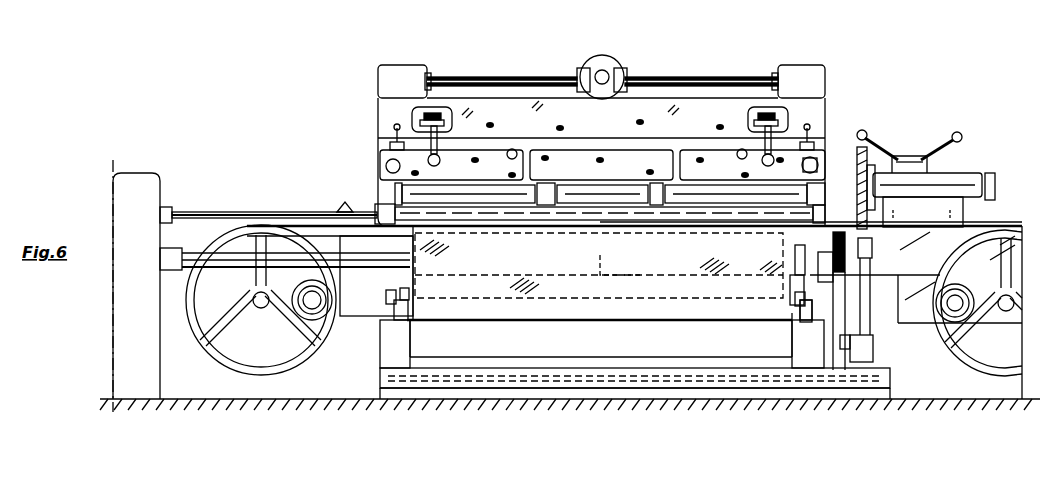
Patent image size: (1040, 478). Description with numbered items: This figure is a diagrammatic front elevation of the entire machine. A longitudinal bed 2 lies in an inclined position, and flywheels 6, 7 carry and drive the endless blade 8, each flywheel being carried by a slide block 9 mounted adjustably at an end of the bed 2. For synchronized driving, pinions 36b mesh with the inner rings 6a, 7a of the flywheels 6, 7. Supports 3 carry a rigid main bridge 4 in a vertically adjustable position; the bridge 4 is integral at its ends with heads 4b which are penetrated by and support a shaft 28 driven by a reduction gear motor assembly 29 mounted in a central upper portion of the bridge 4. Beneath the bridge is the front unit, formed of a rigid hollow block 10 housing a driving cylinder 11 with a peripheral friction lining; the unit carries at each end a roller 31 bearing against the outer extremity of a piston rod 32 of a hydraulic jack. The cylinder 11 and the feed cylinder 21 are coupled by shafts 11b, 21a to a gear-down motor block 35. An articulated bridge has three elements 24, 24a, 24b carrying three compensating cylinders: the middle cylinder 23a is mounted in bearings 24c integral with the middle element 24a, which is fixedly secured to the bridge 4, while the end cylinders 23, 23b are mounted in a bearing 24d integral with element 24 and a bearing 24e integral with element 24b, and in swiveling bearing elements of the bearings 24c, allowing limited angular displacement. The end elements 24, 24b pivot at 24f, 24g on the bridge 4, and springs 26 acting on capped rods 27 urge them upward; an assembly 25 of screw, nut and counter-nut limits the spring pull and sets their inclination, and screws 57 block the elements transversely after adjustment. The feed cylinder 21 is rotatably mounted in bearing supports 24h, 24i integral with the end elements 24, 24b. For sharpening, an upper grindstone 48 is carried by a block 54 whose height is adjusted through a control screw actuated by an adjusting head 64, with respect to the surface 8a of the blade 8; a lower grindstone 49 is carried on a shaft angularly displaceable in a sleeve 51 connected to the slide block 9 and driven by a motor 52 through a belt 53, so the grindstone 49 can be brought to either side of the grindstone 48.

The longitudinal bed 2 is at (258, 245).
The supports 3 is at (605, 52).
The rigid main bridge 4 is at (455, 105).
The heads 4b is at (380, 78).
The flywheel 6 is at (212, 352).
The inner ring 6a is at (263, 370).
The flywheel 7 is at (985, 318).
The inner ring 7a is at (1000, 312).
The endless blade 8 is at (909, 113).
The surface of the blade 8a is at (280, 251).
The slide block 9 is at (366, 300).
The rigid hollow block 10 is at (810, 66).
The driving roller or cylinder 11 is at (642, 300).
The shaft 11b is at (233, 345).
The feed cylinder 21 is at (720, 222).
The shaft 21a is at (215, 212).
The end compensating cylinder 23 is at (392, 180).
The middle compensating cylinder 23a is at (635, 165).
The end compensating cylinder 23b is at (818, 165).
The end element of articulated bridge 24 is at (478, 95).
The middle element of articulated bridge 24a is at (612, 160).
The end element of articulated bridge 24b is at (742, 150).
The bearings 24c is at (548, 233).
The bearing 24d is at (420, 195).
The bearing 24e is at (815, 190).
The pivot 24f is at (512, 150).
The pivot 24g is at (716, 160).
The bearing support 24h is at (380, 218).
The bearing support 24i is at (812, 214).
The screw, nut and counter-nut assembly 25 is at (388, 140).
The springs 26 is at (420, 125).
The capped rods 27 is at (385, 124).
The shaft 28 is at (523, 80).
The reduction gear motor assembly 29 is at (606, 66).
The roller 31 is at (405, 300).
The piston rod 32 is at (398, 330).
The gear-down motor block 35 is at (120, 402).
The pinions 36b is at (330, 318).
The upper grindstone 48 is at (857, 150).
The lower grindstone 49 is at (822, 210).
The sleeve 51 is at (870, 310).
The motor 52 is at (864, 362).
The belt 53 is at (826, 282).
The block 54 is at (940, 185).
The screws 57 is at (386, 164).
The adjusting head 64 is at (910, 156).